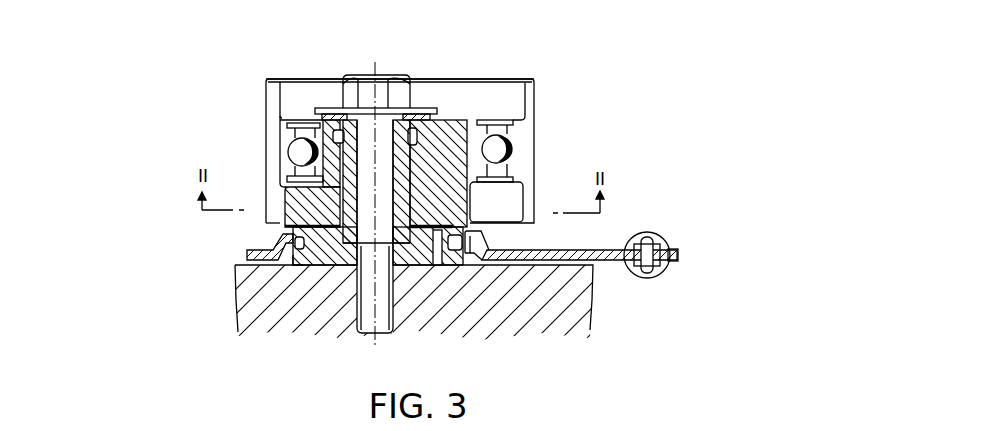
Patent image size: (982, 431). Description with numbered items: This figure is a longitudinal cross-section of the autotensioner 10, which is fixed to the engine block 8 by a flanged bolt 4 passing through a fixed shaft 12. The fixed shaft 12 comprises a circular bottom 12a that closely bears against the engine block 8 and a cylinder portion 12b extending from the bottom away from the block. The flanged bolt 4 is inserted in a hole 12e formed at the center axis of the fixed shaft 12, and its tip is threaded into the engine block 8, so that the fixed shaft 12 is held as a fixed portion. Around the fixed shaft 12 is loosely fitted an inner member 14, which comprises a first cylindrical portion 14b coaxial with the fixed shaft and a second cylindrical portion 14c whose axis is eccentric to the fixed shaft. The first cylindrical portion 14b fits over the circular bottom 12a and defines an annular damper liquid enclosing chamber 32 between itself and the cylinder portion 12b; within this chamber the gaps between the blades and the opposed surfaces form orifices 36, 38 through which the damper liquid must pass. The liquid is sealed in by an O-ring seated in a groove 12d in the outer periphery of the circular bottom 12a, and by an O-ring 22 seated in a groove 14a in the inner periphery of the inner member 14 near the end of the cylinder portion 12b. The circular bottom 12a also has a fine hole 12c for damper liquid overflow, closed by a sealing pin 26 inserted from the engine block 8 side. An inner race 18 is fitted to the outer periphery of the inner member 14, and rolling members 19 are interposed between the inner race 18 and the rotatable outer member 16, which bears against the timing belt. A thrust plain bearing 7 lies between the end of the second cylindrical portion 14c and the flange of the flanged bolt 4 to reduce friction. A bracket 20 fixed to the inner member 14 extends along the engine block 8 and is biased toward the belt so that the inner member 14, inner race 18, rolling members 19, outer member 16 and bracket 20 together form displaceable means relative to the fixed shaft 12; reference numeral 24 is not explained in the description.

The flanged bolt 4 is at (365, 88).
The thrust plain bearing 7 is at (423, 109).
The engine block 8 is at (240, 302).
The autotensioner 10 is at (280, 60).
The fixed shaft 12 is at (408, 116).
The circular bottom 12a is at (337, 268).
The cylinder portion 12b is at (347, 113).
The fine hole 12c is at (468, 266).
The groove 12d is at (296, 264).
The hole 12e is at (388, 112).
The inner member 14 is at (447, 122).
The groove 14a is at (458, 130).
The first cylindrical portion 14b is at (290, 197).
The second cylindrical portion 14c is at (333, 157).
The outer member 16 is at (527, 124).
The inner race 18 is at (505, 167).
The rolling members 19 is at (510, 148).
The bracket 20 is at (611, 262).
The O-ring 22 is at (331, 134).
The plate bracket end 24 is at (485, 252).
The sealing pin 26 is at (455, 262).
The damper liquid enclosing chamber 32 is at (281, 243).
The orifice 36 is at (305, 212).
The orifices 38 is at (435, 266).